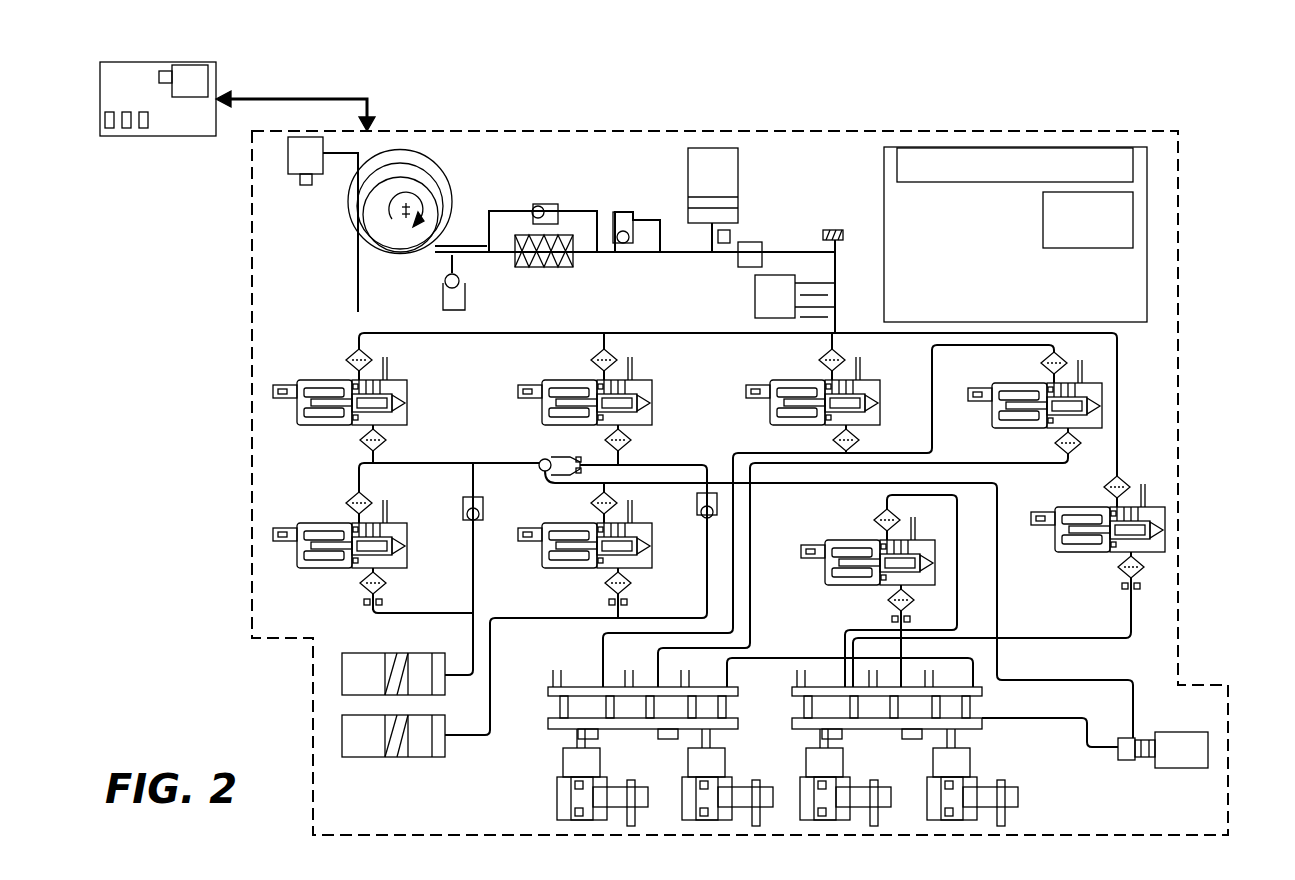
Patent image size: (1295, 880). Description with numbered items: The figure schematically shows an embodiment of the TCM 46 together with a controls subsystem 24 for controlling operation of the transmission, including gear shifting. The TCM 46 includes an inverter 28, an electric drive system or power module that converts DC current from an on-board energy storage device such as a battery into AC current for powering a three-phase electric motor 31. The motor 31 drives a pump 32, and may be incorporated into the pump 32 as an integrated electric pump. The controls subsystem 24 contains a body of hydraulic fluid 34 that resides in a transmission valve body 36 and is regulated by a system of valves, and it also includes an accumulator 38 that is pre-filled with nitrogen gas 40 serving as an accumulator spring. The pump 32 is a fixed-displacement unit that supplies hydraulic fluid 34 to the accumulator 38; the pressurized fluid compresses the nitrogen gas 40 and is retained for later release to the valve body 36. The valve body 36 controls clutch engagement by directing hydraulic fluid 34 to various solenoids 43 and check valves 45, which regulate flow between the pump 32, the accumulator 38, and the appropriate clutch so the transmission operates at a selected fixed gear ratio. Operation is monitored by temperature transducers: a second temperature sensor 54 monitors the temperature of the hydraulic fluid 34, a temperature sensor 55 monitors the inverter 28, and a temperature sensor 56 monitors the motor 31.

The controls subsystem 24 is at (1190, 465).
The inverter 28 is at (204, 95).
The electric motor 31 is at (318, 169).
The pump 32 is at (432, 150).
The hydraulic fluid 34 is at (452, 245).
The transmission valve body 36 is at (1152, 645).
The accumulator 38 is at (748, 175).
The nitrogen gas 40 is at (712, 163).
The solenoids 43 is at (333, 380).
The check valves 45 is at (548, 204).
The TCM 46 is at (146, 96).
The second temperature sensor 54 is at (731, 237).
The temperature sensor 55 is at (164, 71).
The temperature sensor 56 is at (302, 183).